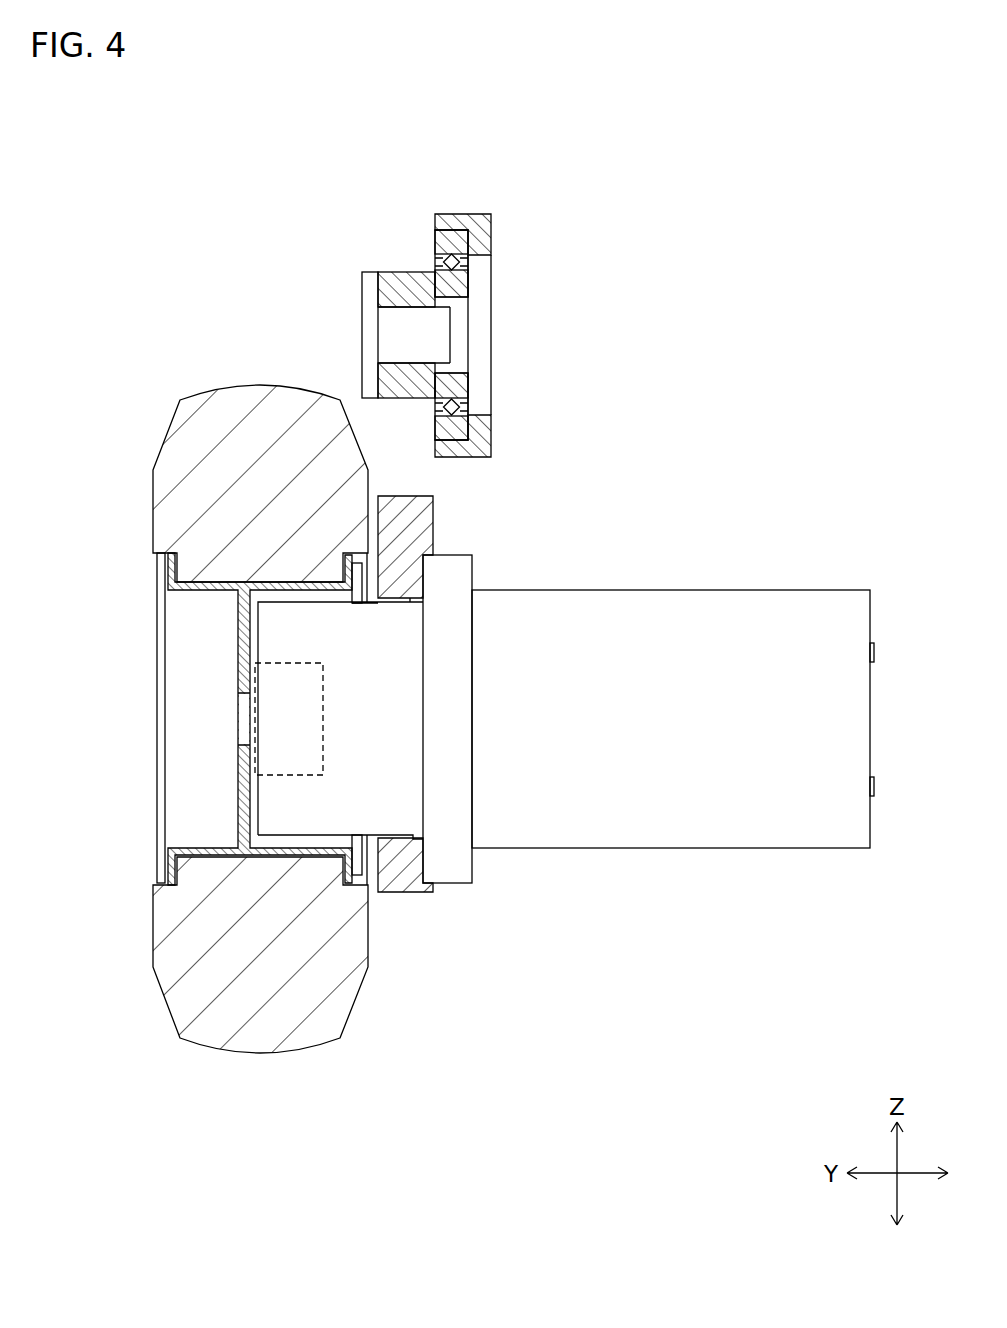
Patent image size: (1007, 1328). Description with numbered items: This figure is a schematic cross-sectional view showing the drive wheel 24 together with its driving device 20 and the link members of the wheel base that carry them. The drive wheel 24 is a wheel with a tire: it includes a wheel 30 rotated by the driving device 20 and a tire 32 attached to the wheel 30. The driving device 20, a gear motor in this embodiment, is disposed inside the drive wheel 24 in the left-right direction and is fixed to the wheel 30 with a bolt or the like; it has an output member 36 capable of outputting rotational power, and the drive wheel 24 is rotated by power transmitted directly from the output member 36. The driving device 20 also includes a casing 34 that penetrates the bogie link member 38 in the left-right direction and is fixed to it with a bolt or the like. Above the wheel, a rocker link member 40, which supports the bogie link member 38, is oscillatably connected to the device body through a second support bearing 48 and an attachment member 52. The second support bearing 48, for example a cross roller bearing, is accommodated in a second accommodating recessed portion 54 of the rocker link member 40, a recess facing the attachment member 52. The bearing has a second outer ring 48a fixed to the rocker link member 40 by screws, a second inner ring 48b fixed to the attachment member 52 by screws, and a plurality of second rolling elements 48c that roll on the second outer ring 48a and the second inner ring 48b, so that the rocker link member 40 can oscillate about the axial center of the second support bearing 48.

The driving device 20 is at (680, 848).
The drive wheel 24 is at (257, 1052).
The wheel 30 is at (245, 800).
The tire 32 is at (175, 962).
The casing 34 is at (507, 828).
The output member 36 is at (305, 738).
The bogie link member 38 is at (433, 527).
The rocker link member 40 is at (473, 212).
The second support bearing 48 is at (445, 334).
The second outer ring 48a is at (437, 433).
The second inner ring 48b is at (437, 390).
The second rolling elements 48c is at (457, 413).
The attachment member 52 is at (362, 280).
The second accommodating recessed portion 54 is at (455, 237).